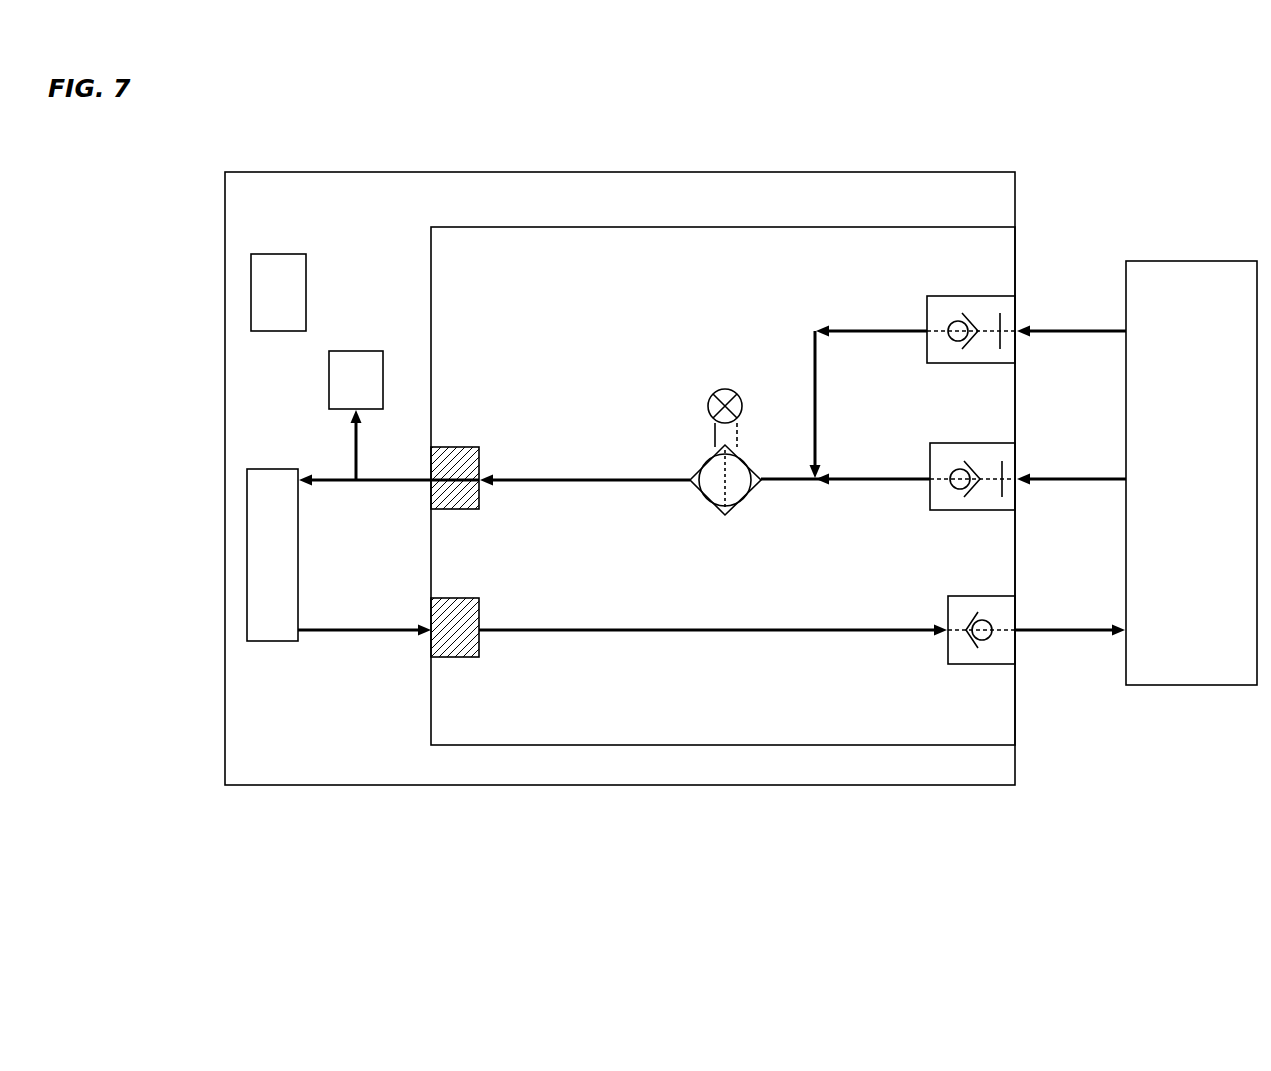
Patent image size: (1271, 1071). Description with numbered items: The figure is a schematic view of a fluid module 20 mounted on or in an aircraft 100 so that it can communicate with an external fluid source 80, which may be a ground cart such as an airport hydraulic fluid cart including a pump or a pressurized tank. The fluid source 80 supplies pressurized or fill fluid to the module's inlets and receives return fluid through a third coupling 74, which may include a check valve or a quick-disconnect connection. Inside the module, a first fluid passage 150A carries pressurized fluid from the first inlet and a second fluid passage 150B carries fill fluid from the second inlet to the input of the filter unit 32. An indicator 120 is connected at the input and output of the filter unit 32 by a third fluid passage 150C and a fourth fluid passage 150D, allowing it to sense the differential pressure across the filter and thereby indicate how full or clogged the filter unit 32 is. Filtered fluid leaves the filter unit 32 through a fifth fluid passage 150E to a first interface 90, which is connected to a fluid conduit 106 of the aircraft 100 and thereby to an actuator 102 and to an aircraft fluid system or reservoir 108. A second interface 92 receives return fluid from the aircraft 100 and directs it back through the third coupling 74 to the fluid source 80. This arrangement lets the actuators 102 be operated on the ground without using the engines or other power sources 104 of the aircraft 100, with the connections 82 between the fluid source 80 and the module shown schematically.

The aircraft 100 is at (403, 158).
The fluid module 20 is at (413, 248).
The engines or other power sources 104 is at (292, 347).
The aircraft fluid system/reservoir 108 is at (353, 337).
The actuator 102 is at (268, 658).
The fluid conduit 106 is at (388, 494).
The first interface 90 is at (463, 434).
The second interface 92 is at (458, 675).
The fifth fluid passage 150E is at (559, 464).
The fourth fluid passage 150D is at (686, 434).
The third fluid passage 150C is at (757, 420).
The second fluid passage 150B is at (858, 500).
The first fluid passage 150A is at (871, 318).
The indicator 120 is at (725, 374).
The filter unit 32 is at (725, 530).
The third coupling 74 is at (1035, 638).
The fluid connections 82 is at (1090, 348).
The fluid source 80 is at (1191, 473).